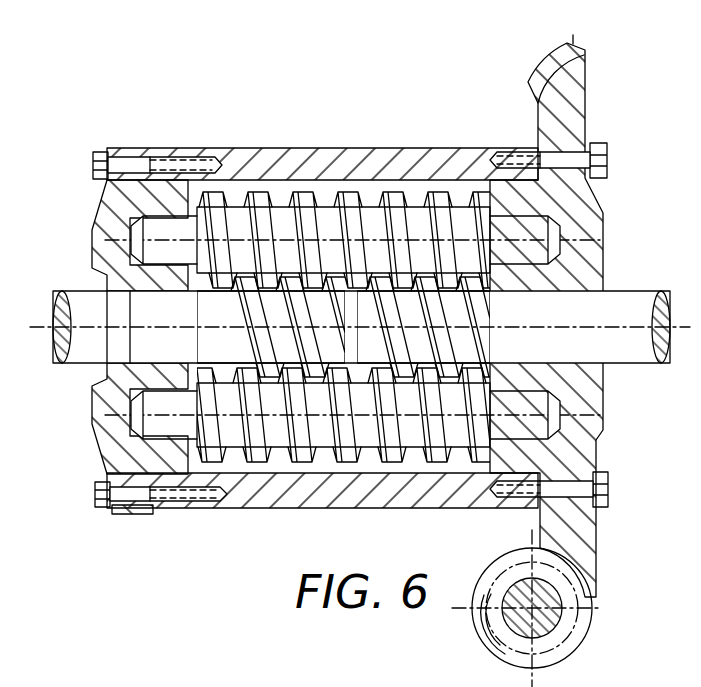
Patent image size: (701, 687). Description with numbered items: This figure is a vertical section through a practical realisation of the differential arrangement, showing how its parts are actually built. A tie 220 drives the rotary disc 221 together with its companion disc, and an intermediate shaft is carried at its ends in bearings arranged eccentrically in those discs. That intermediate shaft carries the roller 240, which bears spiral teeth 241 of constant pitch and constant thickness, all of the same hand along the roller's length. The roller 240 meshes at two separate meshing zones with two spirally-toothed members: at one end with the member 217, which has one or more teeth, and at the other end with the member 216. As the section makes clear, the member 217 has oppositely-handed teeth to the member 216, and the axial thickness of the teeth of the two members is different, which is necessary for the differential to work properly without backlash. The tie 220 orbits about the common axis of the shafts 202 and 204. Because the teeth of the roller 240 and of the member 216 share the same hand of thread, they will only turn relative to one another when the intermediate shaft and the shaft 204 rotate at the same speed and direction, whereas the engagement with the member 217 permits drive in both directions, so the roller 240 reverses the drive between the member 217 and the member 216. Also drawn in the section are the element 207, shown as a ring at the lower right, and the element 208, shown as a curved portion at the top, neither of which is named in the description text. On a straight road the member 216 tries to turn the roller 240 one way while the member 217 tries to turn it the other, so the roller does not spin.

The shaft 202 is at (100, 398).
The shaft 204 is at (628, 360).
The mounting ring 207 is at (567, 637).
The arcuate flange portion 208 is at (543, 92).
The member 216 is at (456, 318).
The spirally-toothed member 217 is at (133, 343).
The tie 220 is at (285, 500).
The rotary disc 221 is at (117, 197).
The roller 240 is at (327, 210).
The spiral teeth 241 is at (257, 203).